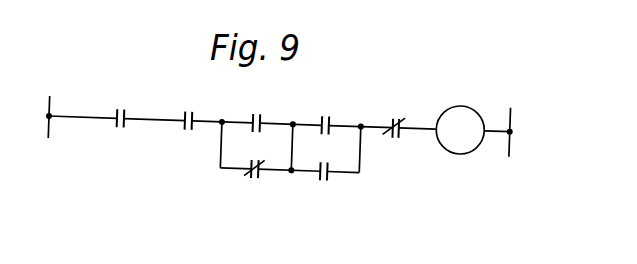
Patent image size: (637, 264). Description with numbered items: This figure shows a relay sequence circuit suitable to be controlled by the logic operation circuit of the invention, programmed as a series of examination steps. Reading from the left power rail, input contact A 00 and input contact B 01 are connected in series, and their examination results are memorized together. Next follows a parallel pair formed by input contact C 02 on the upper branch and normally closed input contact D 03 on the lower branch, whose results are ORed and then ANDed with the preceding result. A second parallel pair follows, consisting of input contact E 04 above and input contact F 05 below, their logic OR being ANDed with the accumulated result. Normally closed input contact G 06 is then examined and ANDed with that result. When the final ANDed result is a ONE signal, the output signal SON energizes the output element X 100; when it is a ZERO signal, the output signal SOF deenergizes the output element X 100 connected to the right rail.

The input contact A 00 is at (118, 116).
The input contact B 01 is at (190, 118).
The input contact C 02 is at (271, 119).
The input contact D 03 is at (268, 170).
The input contact E 04 is at (339, 120).
The input contact F 05 is at (339, 172).
The input contact G 06 is at (407, 125).
The output element X 100 is at (460, 130).